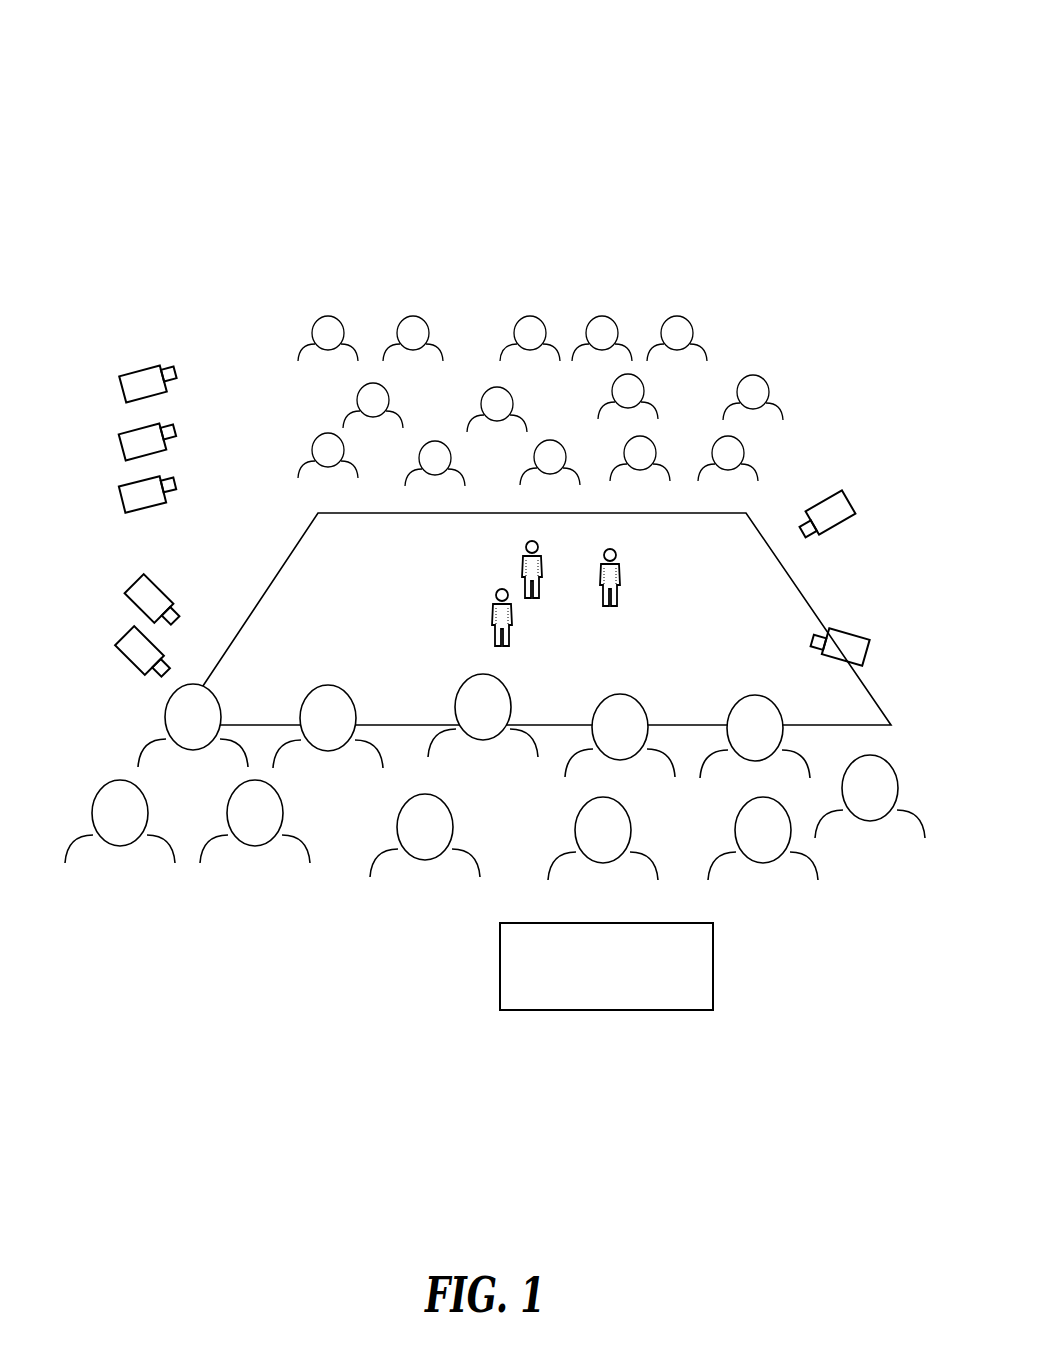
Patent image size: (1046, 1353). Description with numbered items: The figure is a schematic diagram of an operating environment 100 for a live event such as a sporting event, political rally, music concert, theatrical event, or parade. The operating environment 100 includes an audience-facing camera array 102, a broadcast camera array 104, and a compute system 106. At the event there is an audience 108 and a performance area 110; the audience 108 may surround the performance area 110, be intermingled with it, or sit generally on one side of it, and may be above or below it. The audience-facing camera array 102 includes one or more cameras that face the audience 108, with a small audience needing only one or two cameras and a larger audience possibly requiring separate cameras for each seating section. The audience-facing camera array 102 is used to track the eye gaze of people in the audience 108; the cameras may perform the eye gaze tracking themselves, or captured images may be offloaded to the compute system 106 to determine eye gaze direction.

The operating environment 100 is at (776, 45).
The audience-facing camera array 102 is at (118, 365).
The broadcast camera array 104 is at (880, 475).
The compute system 106 is at (713, 923).
The audience 108 is at (763, 318).
The performance area 110 is at (681, 668).